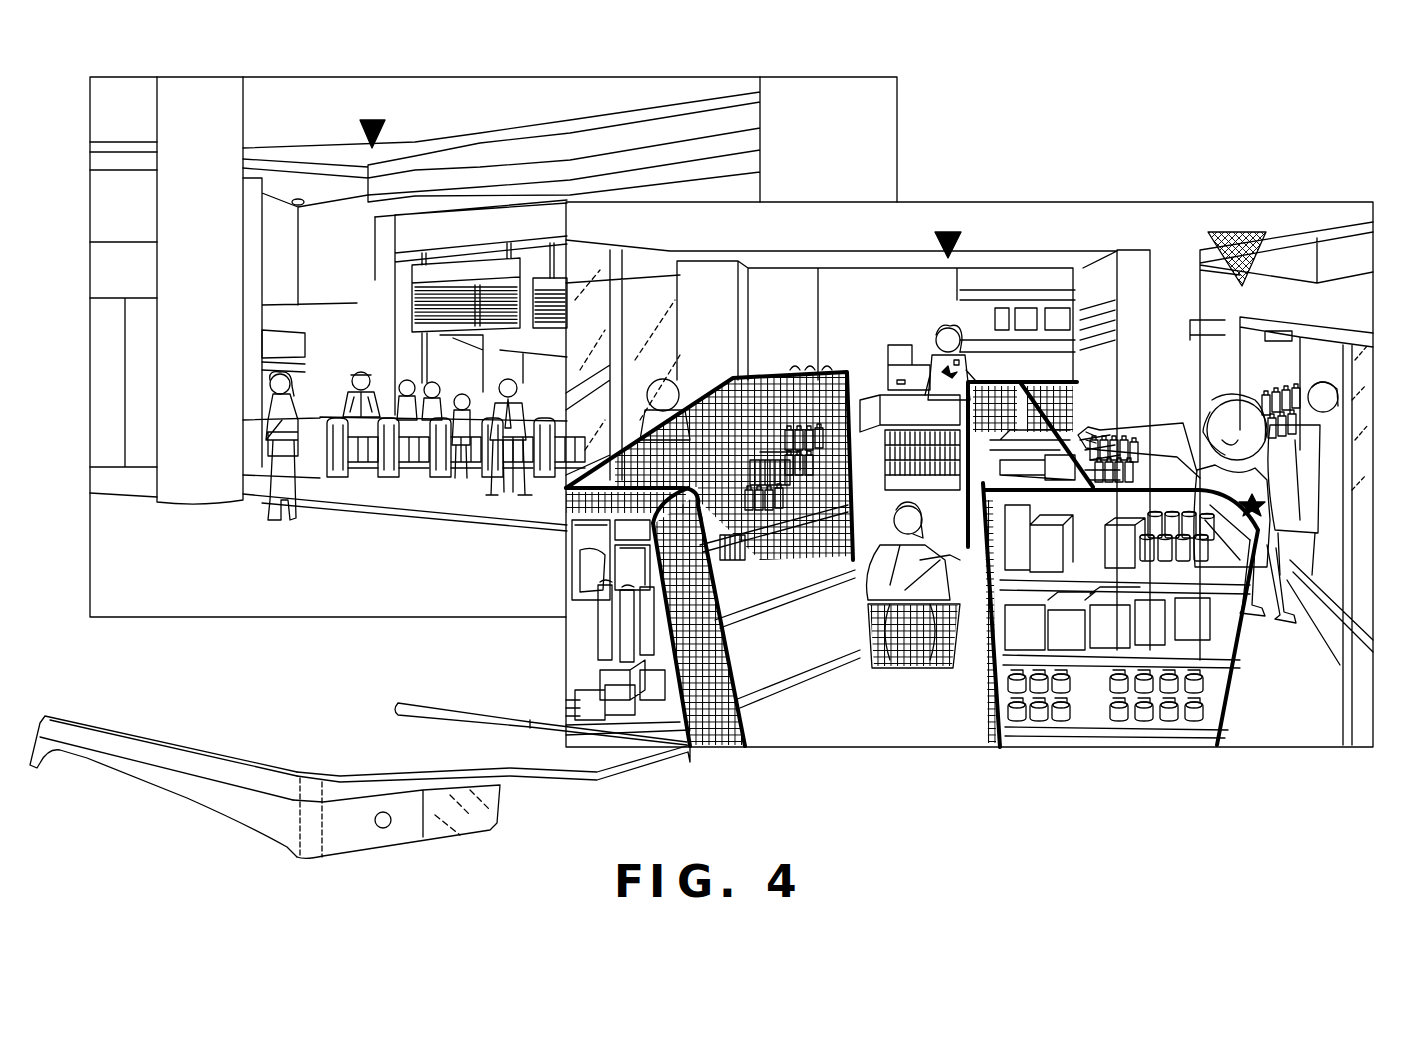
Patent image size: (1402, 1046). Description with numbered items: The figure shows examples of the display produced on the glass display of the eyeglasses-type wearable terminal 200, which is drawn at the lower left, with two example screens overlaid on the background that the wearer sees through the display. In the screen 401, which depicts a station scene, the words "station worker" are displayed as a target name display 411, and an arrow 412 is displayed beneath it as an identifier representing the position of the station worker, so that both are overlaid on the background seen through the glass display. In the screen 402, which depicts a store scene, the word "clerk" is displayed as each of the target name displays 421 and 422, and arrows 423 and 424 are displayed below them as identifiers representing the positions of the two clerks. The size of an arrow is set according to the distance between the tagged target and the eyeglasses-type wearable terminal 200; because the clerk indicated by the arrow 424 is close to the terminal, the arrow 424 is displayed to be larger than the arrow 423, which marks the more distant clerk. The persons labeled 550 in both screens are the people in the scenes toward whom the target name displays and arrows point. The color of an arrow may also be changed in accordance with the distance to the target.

The screen 401 is at (493, 77).
The screen 402 is at (1113, 202).
The target name display 411 is at (372, 85).
The arrow 412 is at (355, 130).
The target name display 421 is at (948, 205).
The arrow 423 is at (985, 238).
The target name display 422 is at (1243, 208).
The arrow 424 is at (1287, 240).
The person 550 is at (378, 390).
The eyeglasses-type wearable terminal 200 is at (190, 755).